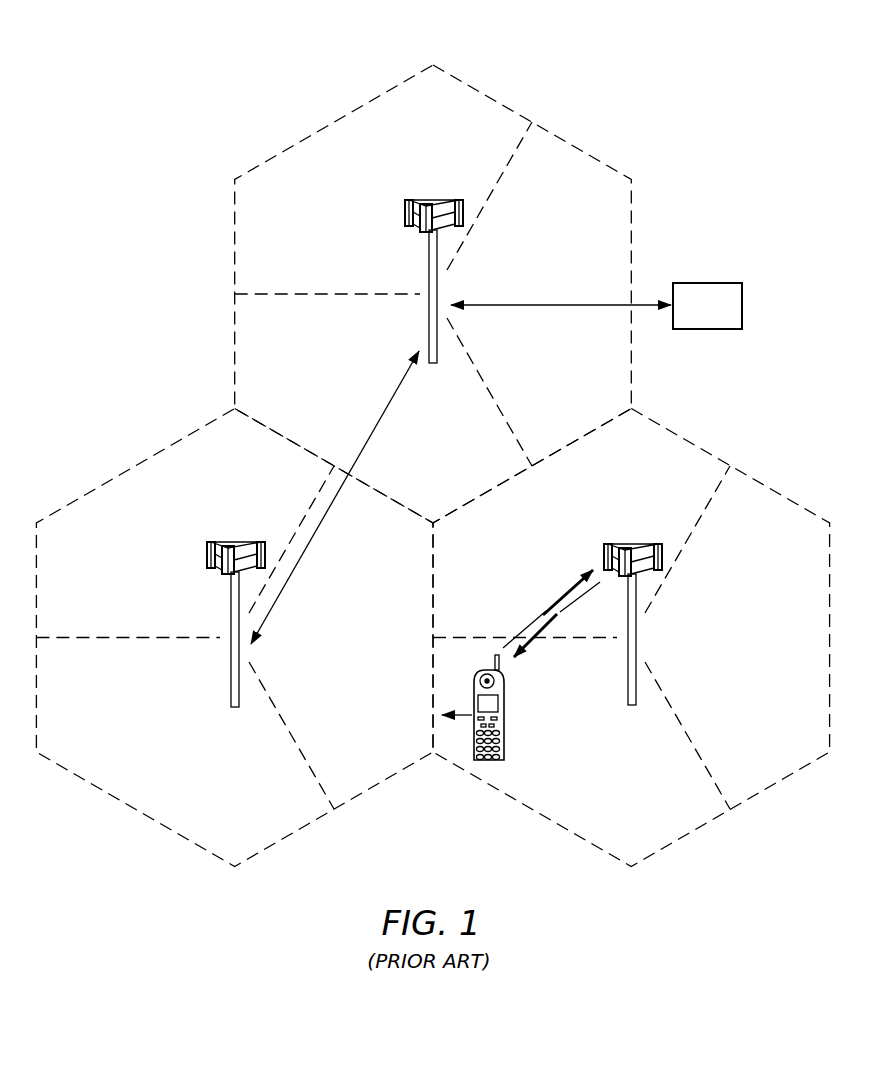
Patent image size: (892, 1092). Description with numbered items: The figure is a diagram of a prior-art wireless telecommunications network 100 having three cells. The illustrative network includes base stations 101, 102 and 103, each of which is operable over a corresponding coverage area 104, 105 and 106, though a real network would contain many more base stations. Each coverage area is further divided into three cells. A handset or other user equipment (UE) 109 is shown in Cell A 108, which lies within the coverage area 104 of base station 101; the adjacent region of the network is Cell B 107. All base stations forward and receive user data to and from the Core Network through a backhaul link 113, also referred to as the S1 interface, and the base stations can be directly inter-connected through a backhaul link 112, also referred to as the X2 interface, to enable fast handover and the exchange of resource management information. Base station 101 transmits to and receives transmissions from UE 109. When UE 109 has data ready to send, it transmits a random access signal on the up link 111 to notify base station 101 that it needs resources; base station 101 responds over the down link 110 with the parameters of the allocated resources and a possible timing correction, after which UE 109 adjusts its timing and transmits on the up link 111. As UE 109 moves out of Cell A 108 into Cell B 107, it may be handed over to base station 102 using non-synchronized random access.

The wireless telecommunications network 100 is at (621, 68).
The base station 101 is at (640, 638).
The base station 102 is at (229, 667).
The base station 103 is at (428, 313).
The coverage area 104 is at (768, 793).
The coverage area 105 is at (134, 810).
The coverage area 106 is at (234, 250).
The Cell B 107 is at (345, 749).
The Cell A 108 is at (598, 816).
The user equipment (UE) 109 is at (504, 723).
The down link 110 is at (557, 632).
The up link 111 is at (560, 591).
The backhaul link (X2 interface) 112 is at (382, 413).
The backhaul link (S1 interface) 113 is at (535, 305).